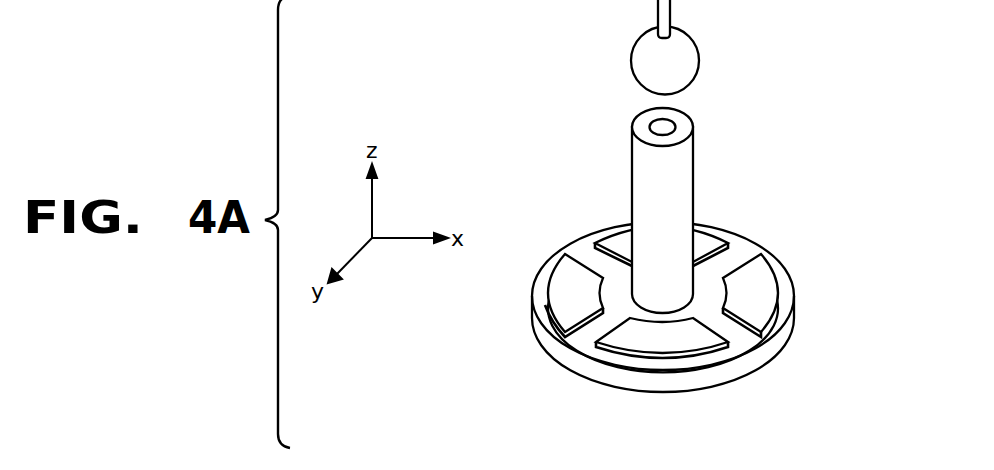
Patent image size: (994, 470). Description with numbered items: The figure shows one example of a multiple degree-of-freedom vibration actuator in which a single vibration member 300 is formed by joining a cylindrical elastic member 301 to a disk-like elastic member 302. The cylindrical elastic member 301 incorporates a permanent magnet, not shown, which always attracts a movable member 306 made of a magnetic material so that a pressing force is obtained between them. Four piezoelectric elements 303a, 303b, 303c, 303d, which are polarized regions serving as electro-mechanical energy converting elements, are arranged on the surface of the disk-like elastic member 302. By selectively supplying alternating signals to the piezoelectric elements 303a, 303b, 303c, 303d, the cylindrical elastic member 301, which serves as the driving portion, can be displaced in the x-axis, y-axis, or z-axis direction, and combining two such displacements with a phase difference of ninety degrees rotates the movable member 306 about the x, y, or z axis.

The vibration member 300 is at (870, 59).
The cylindrical elastic member 301 is at (695, 148).
The disk-like elastic member 302 is at (750, 343).
The piezoelectric element 303a is at (552, 293).
The piezoelectric element 303b is at (713, 239).
The piezoelectric element 303c is at (778, 284).
The piezoelectric element 303d is at (696, 347).
The movable member 306 is at (692, 56).